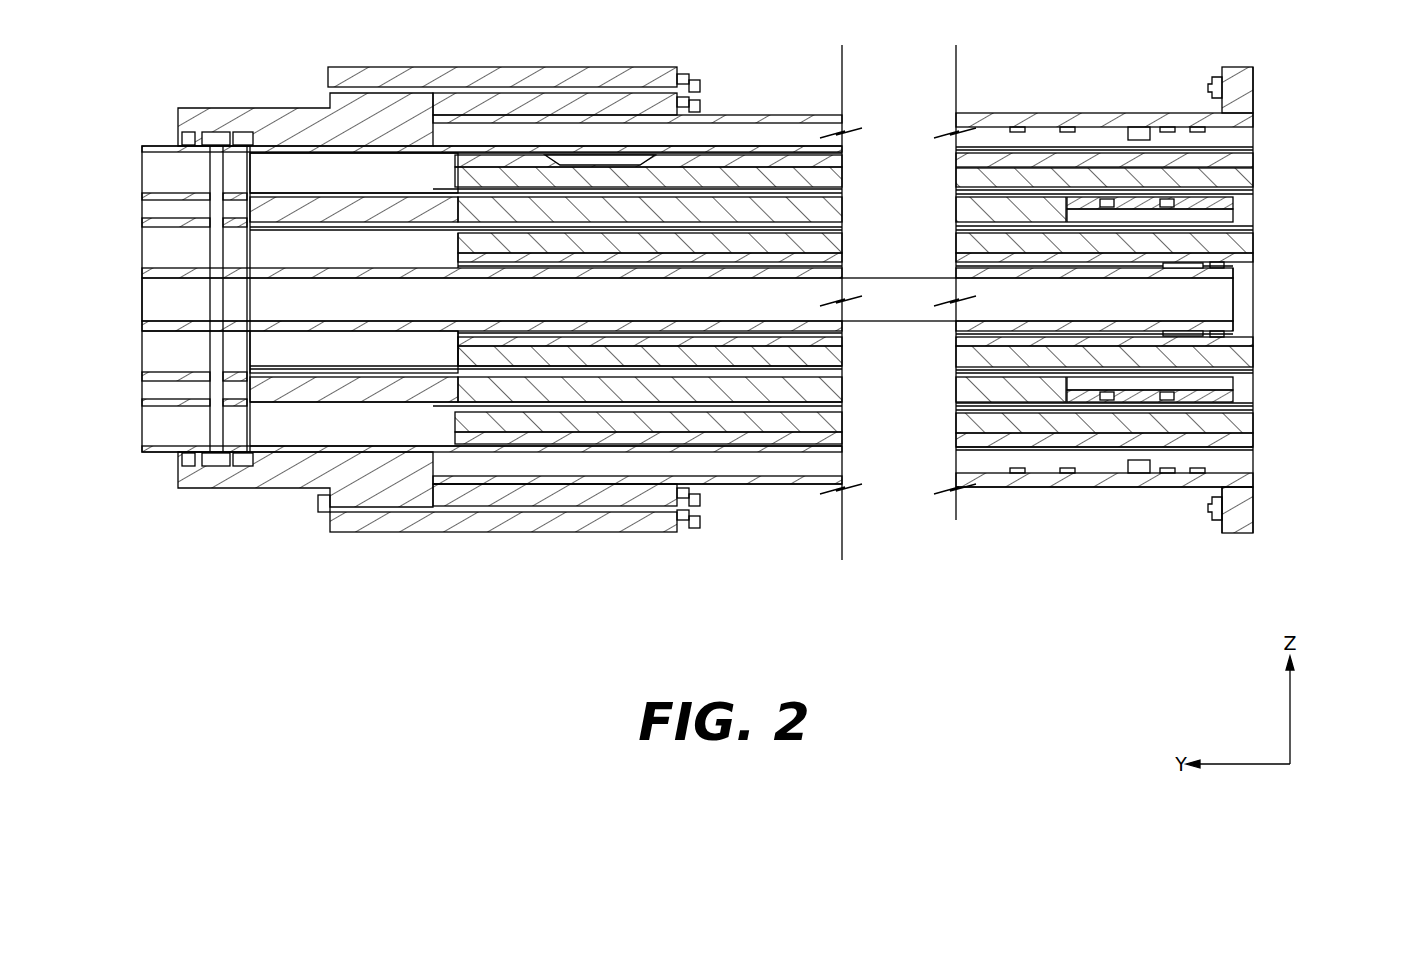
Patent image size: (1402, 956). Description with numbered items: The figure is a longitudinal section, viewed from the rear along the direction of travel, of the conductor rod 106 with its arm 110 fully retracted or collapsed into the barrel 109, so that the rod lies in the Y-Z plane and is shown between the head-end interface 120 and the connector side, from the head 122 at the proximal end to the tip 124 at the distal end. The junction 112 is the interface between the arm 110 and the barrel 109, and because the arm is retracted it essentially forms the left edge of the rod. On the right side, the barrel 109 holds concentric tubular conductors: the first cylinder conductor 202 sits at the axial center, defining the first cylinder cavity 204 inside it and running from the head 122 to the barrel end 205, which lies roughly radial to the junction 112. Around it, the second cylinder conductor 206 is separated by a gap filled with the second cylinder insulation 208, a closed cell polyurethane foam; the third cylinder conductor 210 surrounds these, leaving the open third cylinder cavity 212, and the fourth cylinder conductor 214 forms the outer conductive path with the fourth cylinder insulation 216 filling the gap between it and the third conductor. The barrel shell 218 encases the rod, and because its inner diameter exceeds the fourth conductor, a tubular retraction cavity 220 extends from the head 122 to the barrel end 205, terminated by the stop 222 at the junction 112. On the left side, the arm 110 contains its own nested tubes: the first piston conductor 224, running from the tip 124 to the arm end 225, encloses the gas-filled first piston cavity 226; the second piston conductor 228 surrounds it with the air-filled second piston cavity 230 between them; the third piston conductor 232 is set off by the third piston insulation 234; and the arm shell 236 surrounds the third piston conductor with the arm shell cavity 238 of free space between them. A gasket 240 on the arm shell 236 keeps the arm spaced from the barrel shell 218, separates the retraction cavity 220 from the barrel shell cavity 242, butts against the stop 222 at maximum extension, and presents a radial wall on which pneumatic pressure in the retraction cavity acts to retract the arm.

The conductor rod 106 is at (898, 331).
The barrel 109 is at (1025, 505).
The arm 110 is at (153, 128).
The junction 112 is at (430, 555).
The head-end interface 120 is at (1238, 555).
The head 122 is at (1270, 124).
The tip 124 is at (118, 360).
The first cylinder conductor 202 is at (1253, 292).
The first cylinder cavity 204 is at (1242, 327).
The barrel end 205 is at (414, 350).
The second cylinder conductor 206 is at (1253, 368).
The second cylinder insulation 208 is at (1253, 243).
The third cylinder conductor 210 is at (1253, 210).
The third cylinder cavity 212 is at (1240, 400).
The fourth cylinder conductor 214 is at (1255, 158).
The fourth cylinder insulation 216 is at (1253, 422).
The barrel shell 218 is at (763, 484).
The retraction cavity 220 is at (843, 300).
The stop 222 is at (378, 483).
The first piston conductor 224 is at (140, 300).
The arm end 225 is at (1248, 268).
The first piston cavity 226 is at (687, 299).
The second piston conductor 228 is at (140, 245).
The second piston cavity 230 is at (354, 352).
The third piston conductor 232 is at (140, 208).
The third piston insulation 234 is at (311, 388).
The arm shell 236 is at (140, 163).
The arm shell cavity 238 is at (354, 173).
The gasket 240 is at (1180, 460).
The barrel shell cavity 242 is at (1242, 467).